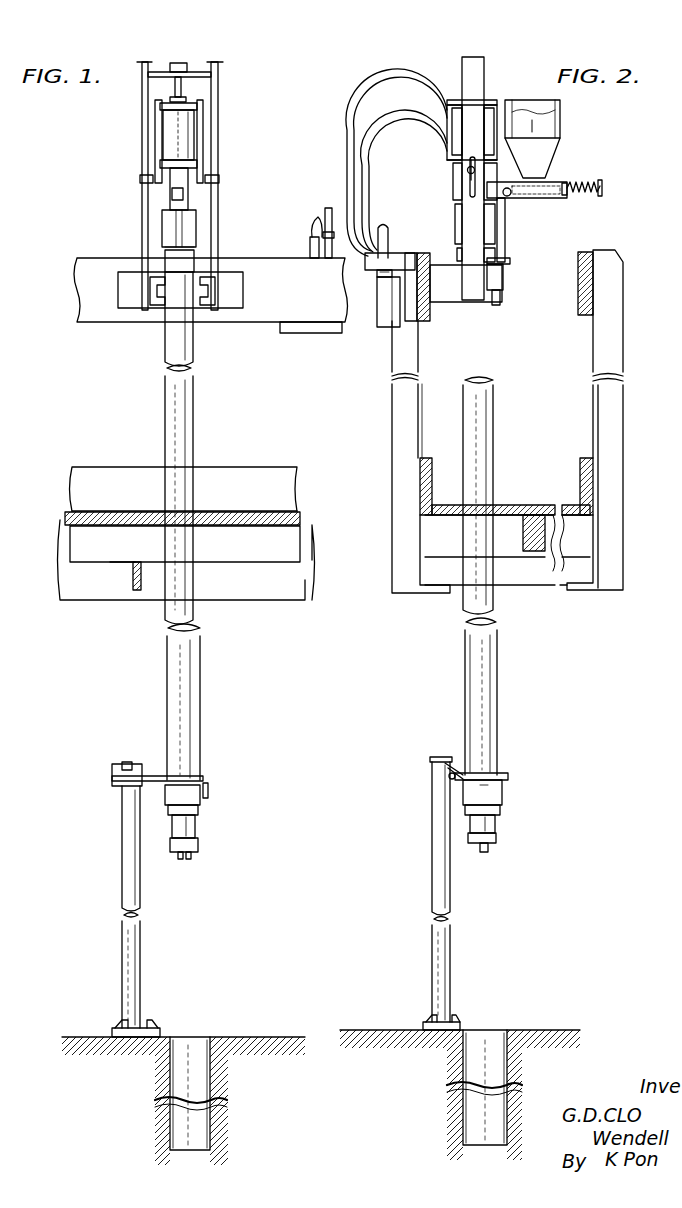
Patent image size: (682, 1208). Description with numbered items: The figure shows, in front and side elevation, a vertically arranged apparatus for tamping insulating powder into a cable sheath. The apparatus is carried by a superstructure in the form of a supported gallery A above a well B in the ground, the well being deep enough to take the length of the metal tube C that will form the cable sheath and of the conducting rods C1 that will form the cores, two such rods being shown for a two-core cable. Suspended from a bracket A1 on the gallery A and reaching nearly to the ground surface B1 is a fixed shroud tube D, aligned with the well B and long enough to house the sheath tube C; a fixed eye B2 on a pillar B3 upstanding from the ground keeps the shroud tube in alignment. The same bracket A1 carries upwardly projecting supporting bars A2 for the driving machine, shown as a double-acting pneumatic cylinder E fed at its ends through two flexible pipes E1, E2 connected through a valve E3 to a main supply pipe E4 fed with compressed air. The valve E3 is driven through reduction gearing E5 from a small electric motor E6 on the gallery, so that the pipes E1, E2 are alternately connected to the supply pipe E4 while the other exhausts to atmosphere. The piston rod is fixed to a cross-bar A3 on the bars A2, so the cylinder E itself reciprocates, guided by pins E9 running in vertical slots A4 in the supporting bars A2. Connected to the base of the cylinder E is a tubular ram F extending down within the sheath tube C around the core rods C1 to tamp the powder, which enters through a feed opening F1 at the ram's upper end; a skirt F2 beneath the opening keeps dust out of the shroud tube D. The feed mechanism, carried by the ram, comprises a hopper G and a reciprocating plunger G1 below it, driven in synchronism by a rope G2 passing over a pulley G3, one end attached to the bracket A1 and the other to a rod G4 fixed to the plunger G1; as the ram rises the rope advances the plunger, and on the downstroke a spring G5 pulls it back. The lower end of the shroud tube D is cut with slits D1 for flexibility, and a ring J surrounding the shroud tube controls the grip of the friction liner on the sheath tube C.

In FIG. 1, the gallery A is at (110, 513).
In FIG. 2, the gallery A is at (553, 535).
In FIG. 1, the bracket A1 is at (130, 298).
In FIG. 2, the bracket A1 is at (462, 289).
In FIG. 1, the supporting bars A2 is at (143, 84).
In FIG. 2, the supporting bars A2 is at (475, 105).
In FIG. 1, the cross-bar A3 is at (158, 66).
In FIG. 2, the vertical slots A4 is at (470, 185).
In FIG. 1, the well B is at (245, 1037).
In FIG. 2, the well B is at (492, 1052).
In FIG. 1, the ground surface B1 is at (83, 1037).
In FIG. 2, the ground surface B1 is at (387, 1030).
In FIG. 1, the fixed eye B2 is at (203, 777).
In FIG. 2, the fixed eye B2 is at (506, 776).
In FIG. 1, the pillar B3 is at (123, 883).
In FIG. 2, the pillar B3 is at (438, 867).
In FIG. 1, the metal tube C is at (195, 825).
In FIG. 2, the metal tube C is at (483, 819).
In FIG. 1, the conducting rods C1 is at (182, 859).
In FIG. 2, the conducting rods C1 is at (488, 852).
In FIG. 1, the shroud tube D is at (198, 348).
In FIG. 2, the shroud tube D is at (478, 451).
In FIG. 1, the slits D1 is at (182, 702).
In FIG. 2, the slits D1 is at (488, 720).
In FIG. 1, the pneumatic cylinder E is at (155, 125).
In FIG. 2, the pneumatic cylinder E is at (458, 118).
In FIG. 1, the flexible pipe E1 is at (328, 210).
In FIG. 2, the flexible pipe E1 is at (385, 86).
In FIG. 1, the flexible pipe E2 is at (313, 220).
In FIG. 2, the flexible pipe E2 is at (384, 128).
In FIG. 2, the valve E3 is at (368, 258).
In FIG. 1, the main supply pipe E4 is at (310, 242).
In FIG. 2, the main supply pipe E4 is at (388, 229).
In FIG. 2, the reduction gearing E5 is at (377, 276).
In FIG. 2, the electric motor E6 is at (380, 308).
In FIG. 1, the pins E9 is at (143, 180).
In FIG. 2, the pins E9 is at (466, 168).
In FIG. 1, the tubular ram F is at (170, 195).
In FIG. 1, the feed opening F1 is at (183, 192).
In FIG. 1, the skirt F2 is at (198, 230).
In FIG. 2, the skirt F2 is at (455, 218).
In FIG. 2, the hopper G is at (545, 120).
In FIG. 2, the plunger G1 is at (527, 198).
In FIG. 2, the rope G2 is at (505, 240).
In FIG. 2, the pulley G3 is at (509, 195).
In FIG. 2, the rod G4 is at (602, 189).
In FIG. 2, the spring G5 is at (580, 183).
In FIG. 1, the ring J is at (165, 793).
In FIG. 2, the ring J is at (502, 793).